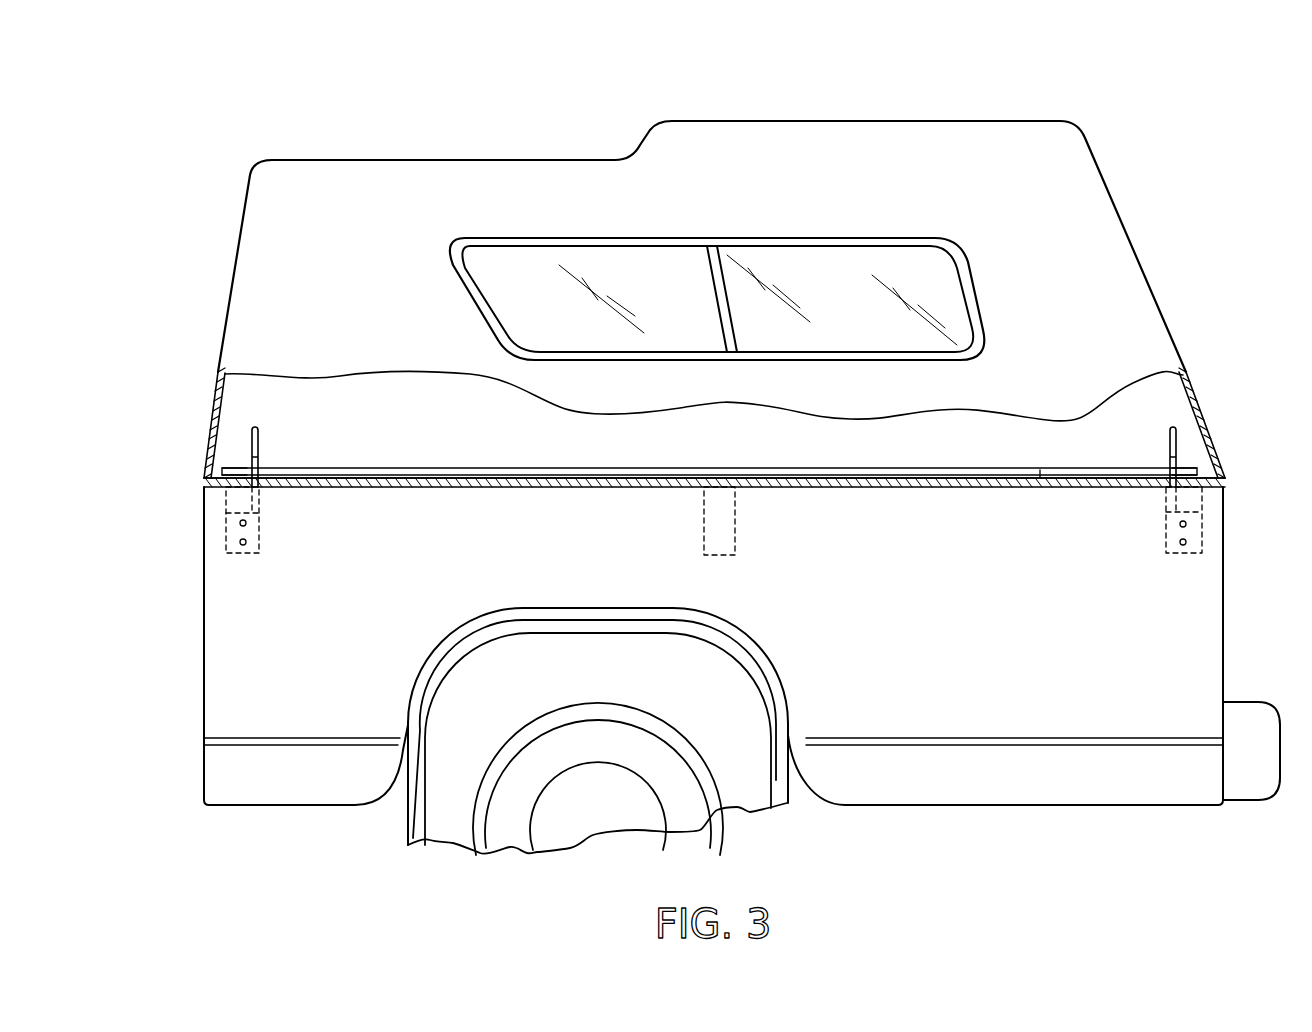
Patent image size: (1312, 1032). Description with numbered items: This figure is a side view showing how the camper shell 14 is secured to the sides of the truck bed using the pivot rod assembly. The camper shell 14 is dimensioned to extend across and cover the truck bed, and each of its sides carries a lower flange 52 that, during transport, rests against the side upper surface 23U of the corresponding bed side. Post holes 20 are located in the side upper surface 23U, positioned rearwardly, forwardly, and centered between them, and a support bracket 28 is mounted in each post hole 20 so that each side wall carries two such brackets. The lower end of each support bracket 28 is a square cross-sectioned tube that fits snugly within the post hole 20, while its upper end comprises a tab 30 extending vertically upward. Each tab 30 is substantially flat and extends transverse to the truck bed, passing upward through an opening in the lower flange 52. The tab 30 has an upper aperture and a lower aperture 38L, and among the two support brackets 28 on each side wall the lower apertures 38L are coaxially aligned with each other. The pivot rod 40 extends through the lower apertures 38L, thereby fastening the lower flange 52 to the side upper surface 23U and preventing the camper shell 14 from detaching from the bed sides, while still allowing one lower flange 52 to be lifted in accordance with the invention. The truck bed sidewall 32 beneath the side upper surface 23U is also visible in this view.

The camper shell 14 is at (808, 121).
The post holes 20 is at (247, 472).
The side upper surface 23U is at (522, 476).
The support bracket 28 is at (253, 165).
The tab 30 is at (1303, 600).
The truck bed sidewall 32 is at (240, 697).
The lower aperture 38L is at (258, 471).
The pivot rod 40 is at (1035, 468).
The lower flange 52 is at (406, 478).